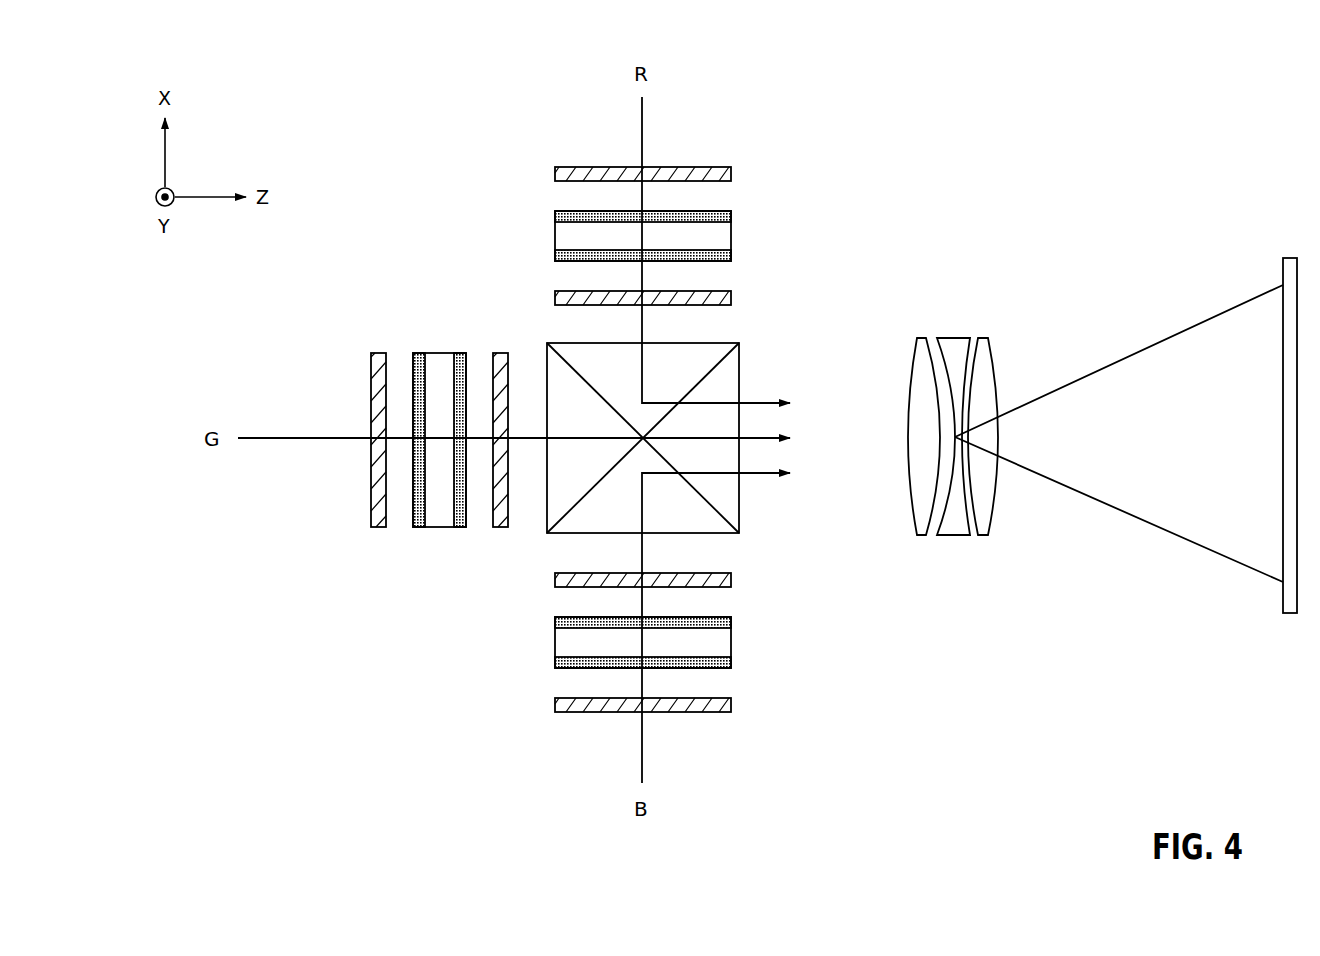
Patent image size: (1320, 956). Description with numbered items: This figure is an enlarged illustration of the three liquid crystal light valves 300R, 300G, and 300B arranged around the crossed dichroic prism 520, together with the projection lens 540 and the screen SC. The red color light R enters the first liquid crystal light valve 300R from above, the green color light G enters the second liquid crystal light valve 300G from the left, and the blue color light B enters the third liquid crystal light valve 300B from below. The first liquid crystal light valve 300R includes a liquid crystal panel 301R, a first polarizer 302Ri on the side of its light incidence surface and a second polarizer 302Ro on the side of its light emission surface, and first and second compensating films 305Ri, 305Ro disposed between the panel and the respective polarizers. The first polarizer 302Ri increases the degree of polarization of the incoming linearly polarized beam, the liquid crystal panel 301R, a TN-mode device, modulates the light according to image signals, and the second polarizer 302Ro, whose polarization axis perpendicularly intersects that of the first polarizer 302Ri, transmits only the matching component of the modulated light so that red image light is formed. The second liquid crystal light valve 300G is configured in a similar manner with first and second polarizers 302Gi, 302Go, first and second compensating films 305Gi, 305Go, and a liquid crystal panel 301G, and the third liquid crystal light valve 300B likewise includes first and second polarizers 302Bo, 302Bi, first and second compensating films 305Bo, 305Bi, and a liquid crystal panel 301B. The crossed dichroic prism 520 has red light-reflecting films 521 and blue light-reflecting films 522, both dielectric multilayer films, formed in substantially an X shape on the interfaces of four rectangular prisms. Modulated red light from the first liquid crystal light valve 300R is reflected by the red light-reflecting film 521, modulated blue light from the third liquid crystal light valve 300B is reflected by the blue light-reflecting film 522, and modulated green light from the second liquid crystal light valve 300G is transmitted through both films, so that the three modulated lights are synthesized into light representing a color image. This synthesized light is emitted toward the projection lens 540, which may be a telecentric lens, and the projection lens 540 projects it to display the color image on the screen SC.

The first liquid crystal light valve 300R is at (820, 157).
The first polarizer 302Ri is at (731, 174).
The first compensating film 305Ri is at (731, 213).
The liquid crystal panel 301R is at (731, 237).
The second compensating film 305Ro is at (731, 258).
The second polarizer 302Ro is at (731, 297).
The third liquid crystal light valve 300B is at (820, 563).
The first polarizer 302Bo is at (731, 580).
The first compensating film 305Bo is at (731, 618).
The liquid crystal panel 301B is at (731, 640).
The second compensating film 305Bi is at (731, 665).
The second polarizer 302Bi is at (731, 705).
The second liquid crystal light valve 300G is at (295, 606).
The first polarizer 302Gi is at (377, 527).
The first compensating film 305Gi is at (418, 527).
The liquid crystal panel 301G is at (442, 527).
The second compensating film 305Go is at (460, 527).
The second polarizer 302Go is at (500, 527).
The crossed dichroic prism 520 is at (735, 357).
The red light-reflecting film 521 is at (700, 492).
The blue light-reflecting film 522 is at (703, 378).
The projection lens 540 is at (952, 338).
The screen SC is at (1288, 258).